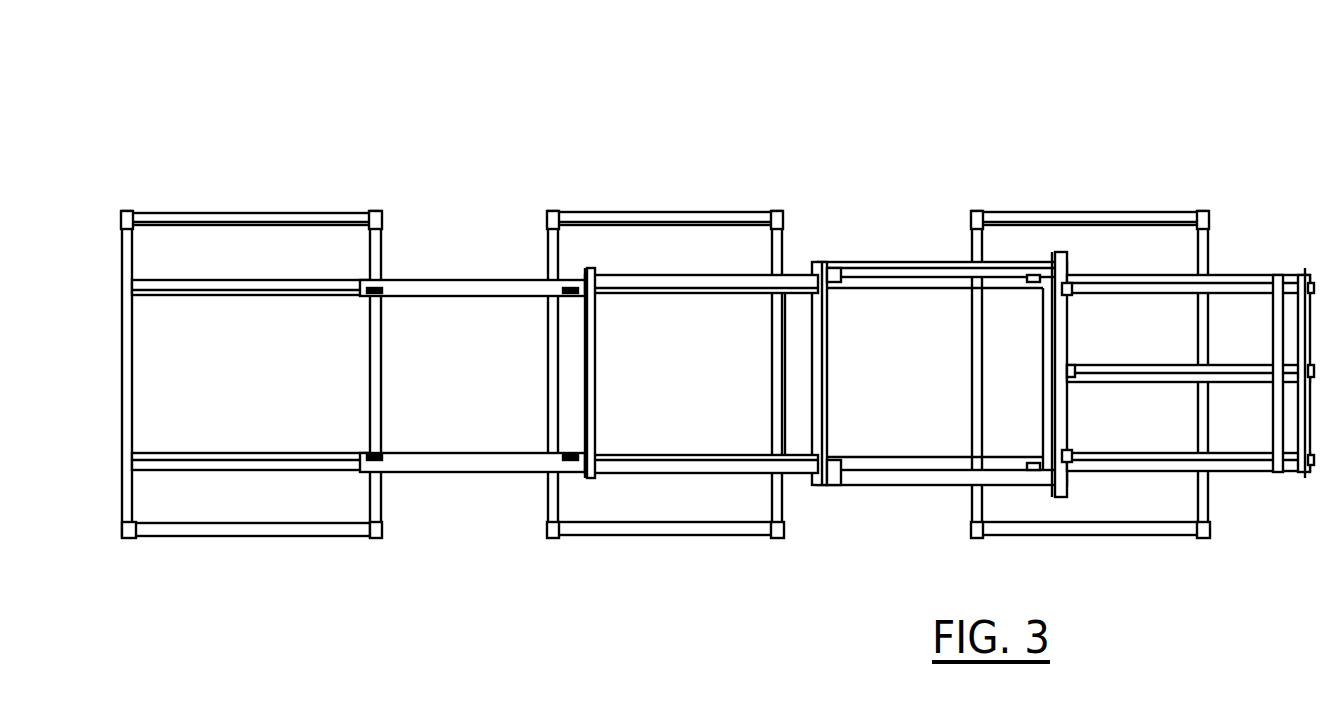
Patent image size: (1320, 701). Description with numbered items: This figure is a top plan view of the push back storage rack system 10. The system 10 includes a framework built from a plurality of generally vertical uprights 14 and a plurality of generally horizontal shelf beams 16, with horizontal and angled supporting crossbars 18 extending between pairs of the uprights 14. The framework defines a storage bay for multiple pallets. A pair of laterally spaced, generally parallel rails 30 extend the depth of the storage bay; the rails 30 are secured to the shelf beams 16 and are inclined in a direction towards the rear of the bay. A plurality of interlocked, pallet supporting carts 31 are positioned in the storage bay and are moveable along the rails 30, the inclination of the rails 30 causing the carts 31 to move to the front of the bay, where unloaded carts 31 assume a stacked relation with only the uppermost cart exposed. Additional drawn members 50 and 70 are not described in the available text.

The push back storage rack system 10 is at (677, 314).
The vertical upright 14 is at (659, 375).
The shelf beam 16 is at (122, 257).
The supporting crossbar 18 is at (272, 530).
The rail 30 is at (197, 287).
The pallet supporting cart 31 is at (493, 258).
The lower connecting bar 50 is at (459, 485).
The intermediate connecting frame 70 is at (707, 448).